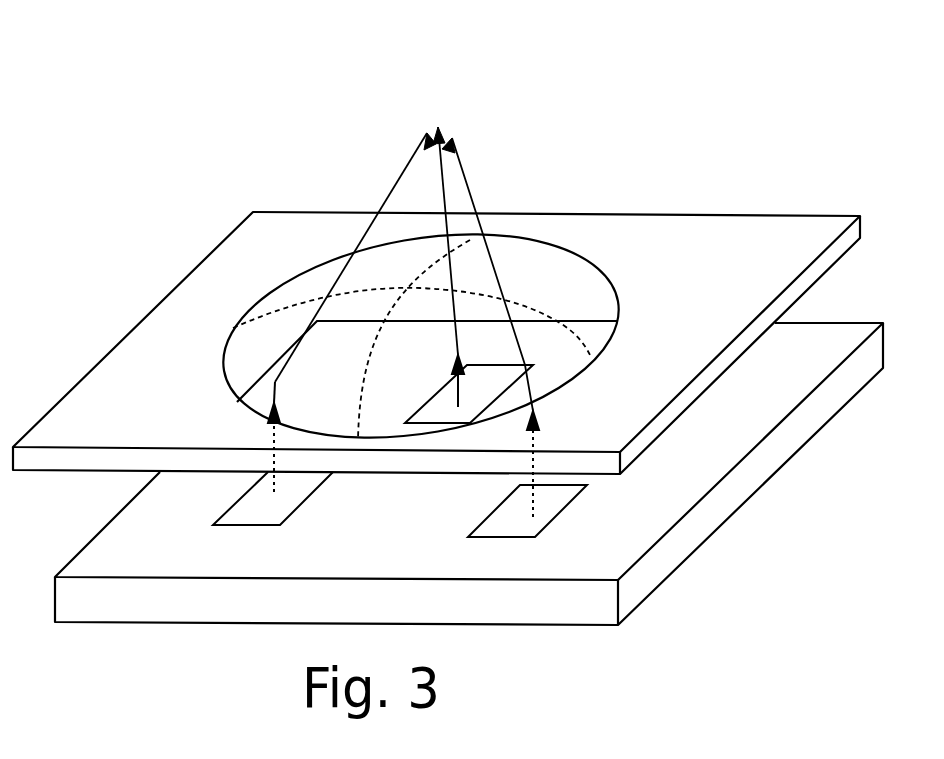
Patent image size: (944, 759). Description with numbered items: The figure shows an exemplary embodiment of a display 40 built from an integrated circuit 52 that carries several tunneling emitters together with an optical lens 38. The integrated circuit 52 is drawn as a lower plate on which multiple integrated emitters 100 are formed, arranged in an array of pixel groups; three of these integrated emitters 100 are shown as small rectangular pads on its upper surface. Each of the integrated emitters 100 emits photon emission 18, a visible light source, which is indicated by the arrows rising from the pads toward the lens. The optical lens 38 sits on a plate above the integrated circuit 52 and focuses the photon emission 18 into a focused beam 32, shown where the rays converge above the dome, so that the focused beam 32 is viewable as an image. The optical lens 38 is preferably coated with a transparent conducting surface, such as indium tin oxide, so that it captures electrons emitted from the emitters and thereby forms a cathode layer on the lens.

The photon emission 18 is at (475, 148).
The focused beam 32 is at (448, 133).
The optical lens 38 is at (545, 268).
The display 40 is at (362, 170).
The integrated circuit 52 is at (760, 488).
The integrated emitters 100 is at (297, 510).